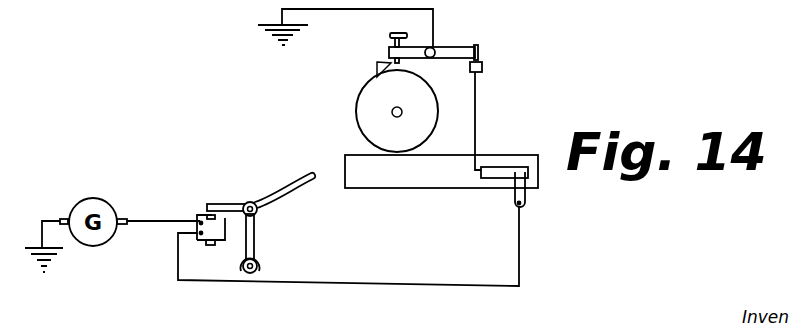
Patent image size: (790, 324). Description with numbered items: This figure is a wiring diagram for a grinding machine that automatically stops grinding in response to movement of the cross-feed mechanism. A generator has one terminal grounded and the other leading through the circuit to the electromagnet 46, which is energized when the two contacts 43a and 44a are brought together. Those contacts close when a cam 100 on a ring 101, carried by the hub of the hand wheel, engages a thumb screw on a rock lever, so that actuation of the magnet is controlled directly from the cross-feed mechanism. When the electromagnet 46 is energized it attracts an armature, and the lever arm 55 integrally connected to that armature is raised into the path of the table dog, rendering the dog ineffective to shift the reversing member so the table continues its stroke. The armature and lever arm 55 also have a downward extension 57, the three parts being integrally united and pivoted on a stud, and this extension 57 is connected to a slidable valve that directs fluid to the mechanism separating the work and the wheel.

The contact 43a is at (478, 50).
The contact 44a is at (482, 67).
The cam 100 is at (377, 62).
The ring 101 is at (360, 111).
The lever arm 55 is at (275, 194).
The downward extension 57 is at (254, 237).
The electromagnet 46 is at (218, 235).